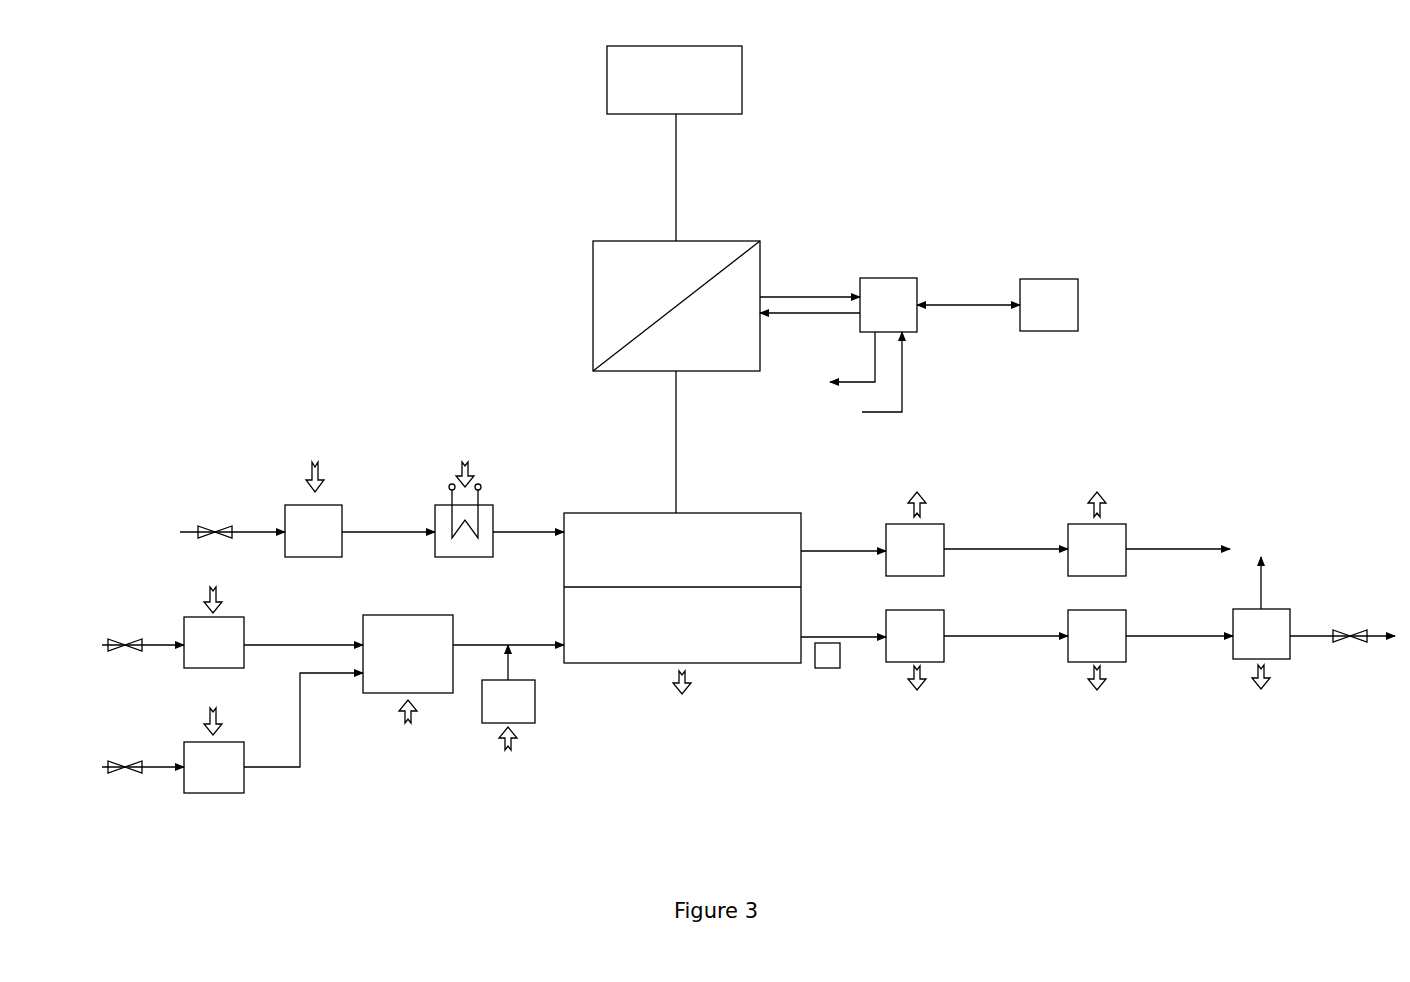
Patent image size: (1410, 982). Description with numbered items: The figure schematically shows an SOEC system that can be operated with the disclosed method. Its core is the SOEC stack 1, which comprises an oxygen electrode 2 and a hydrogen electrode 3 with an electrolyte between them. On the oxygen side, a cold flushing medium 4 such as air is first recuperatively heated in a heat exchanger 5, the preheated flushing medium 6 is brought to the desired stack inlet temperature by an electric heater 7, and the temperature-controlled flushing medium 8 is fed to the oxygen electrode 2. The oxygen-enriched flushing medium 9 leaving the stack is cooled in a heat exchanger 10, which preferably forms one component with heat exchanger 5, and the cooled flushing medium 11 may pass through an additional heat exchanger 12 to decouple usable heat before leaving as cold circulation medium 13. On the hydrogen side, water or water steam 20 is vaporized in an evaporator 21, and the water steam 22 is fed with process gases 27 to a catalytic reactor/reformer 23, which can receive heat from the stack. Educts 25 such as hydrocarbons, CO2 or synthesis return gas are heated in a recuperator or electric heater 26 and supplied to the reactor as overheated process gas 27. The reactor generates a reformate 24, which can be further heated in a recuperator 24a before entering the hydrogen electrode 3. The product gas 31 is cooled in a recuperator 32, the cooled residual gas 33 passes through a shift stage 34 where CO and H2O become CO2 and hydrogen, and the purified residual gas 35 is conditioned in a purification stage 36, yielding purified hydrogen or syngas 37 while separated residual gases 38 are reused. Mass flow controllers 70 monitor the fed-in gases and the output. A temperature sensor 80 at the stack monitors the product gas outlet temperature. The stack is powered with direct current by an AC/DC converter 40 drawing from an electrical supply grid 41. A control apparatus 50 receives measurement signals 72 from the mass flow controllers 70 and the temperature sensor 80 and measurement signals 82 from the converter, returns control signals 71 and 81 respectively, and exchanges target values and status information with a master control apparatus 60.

The SOEC stack 1 is at (795, 663).
The oxygen electrode 2 is at (682, 563).
The hydrogen electrode 3 is at (682, 625).
The cold flushing medium 4 is at (232, 519).
The heat exchanger 5 is at (313, 496).
The preheated flushing medium 6 is at (388, 519).
The electric heater 7 is at (493, 550).
The temperature-controlled flushing medium 8 is at (528, 519).
The oxygen-enriched flushing medium 9 is at (843, 538).
The heat exchanger 10 is at (915, 519).
The cooled flushing medium 11 is at (1006, 536).
The additional heat exchanger 12 is at (1097, 519).
The cold circulation medium 13 is at (1178, 536).
The water or water steam 20 is at (143, 630).
The evaporator 21 is at (214, 614).
The water steam 22 is at (303, 630).
The catalytic reactor/reformer 23 is at (408, 687).
The reformate 24 is at (508, 630).
The recuperator 24a is at (508, 715).
The educts 25 is at (143, 752).
The recuperator or electric heater 26 is at (214, 736).
The process gases 27 is at (303, 720).
The product gas 31 is at (843, 622).
The recuperator 32 is at (915, 667).
The cooled residual gas 33 is at (1006, 623).
The shift stage 34 is at (1097, 667).
The purified residual gas 35 is at (1179, 623).
The purification stage 36 is at (1261, 666).
The purified hydrogen/syngas 37 is at (1347, 655).
The separated residual gases 38 is at (1281, 581).
The AC/DC converter 40 is at (740, 238).
The electrical supply grid 41 is at (674, 143).
The control apparatus 50 is at (940, 305).
The master control apparatus 60 is at (1049, 305).
The mass flow controller 70 is at (203, 534).
The control signals 71 is at (852, 371).
The measurement signals 72 is at (882, 386).
The temperature sensor 80 is at (840, 668).
The control signals 81 is at (810, 328).
The measurement signals 82 is at (810, 282).